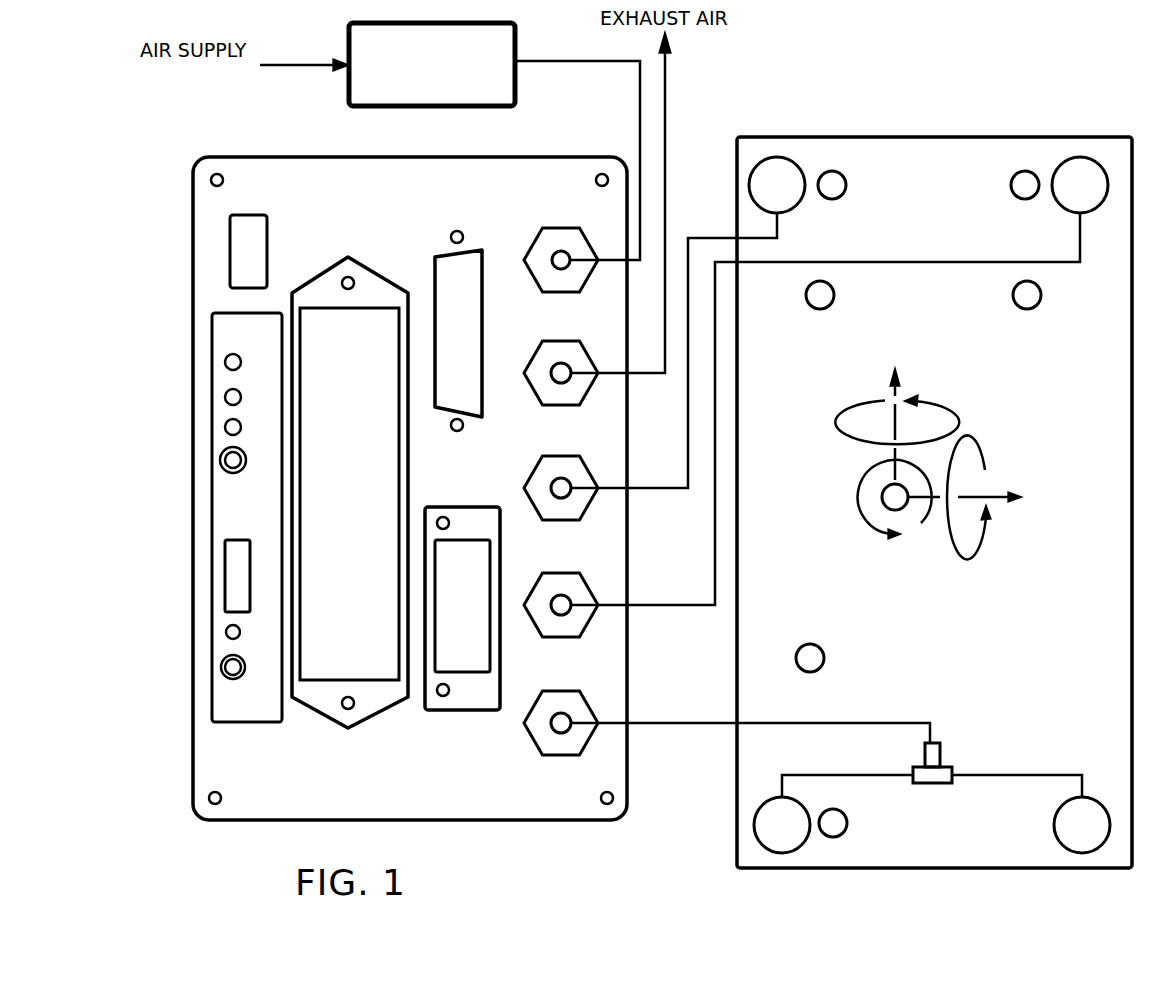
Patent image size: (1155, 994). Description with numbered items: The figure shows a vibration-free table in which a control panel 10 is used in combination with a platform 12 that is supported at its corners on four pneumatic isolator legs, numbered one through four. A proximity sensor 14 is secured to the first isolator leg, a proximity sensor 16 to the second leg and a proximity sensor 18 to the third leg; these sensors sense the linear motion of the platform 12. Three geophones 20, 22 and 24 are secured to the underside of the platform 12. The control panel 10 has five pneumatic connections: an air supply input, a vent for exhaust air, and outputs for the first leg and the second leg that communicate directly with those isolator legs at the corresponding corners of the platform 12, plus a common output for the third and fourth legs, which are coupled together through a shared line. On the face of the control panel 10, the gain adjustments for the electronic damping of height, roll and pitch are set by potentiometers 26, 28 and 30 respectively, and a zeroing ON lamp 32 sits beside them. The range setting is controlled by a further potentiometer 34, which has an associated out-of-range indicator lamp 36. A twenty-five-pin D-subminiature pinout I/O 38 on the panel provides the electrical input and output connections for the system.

The control panel 10 is at (178, 761).
The platform 12 is at (1001, 127).
The proximity sensor 14 is at (846, 185).
The proximity sensor 16 is at (1011, 186).
The proximity sensor 18 is at (845, 831).
The geophone 20 is at (834, 294).
The geophone 22 is at (1013, 294).
The geophone 24 is at (803, 671).
The potentiometer 26 is at (225, 362).
The potentiometer 28 is at (225, 397).
The potentiometer 30 is at (225, 427).
The zeroing ON lamp 32 is at (220, 460).
The potentiometer 34 is at (226, 632).
The out-of-range indicator lamp 36 is at (221, 667).
The DB-25 pinout I/O 38 is at (469, 252).